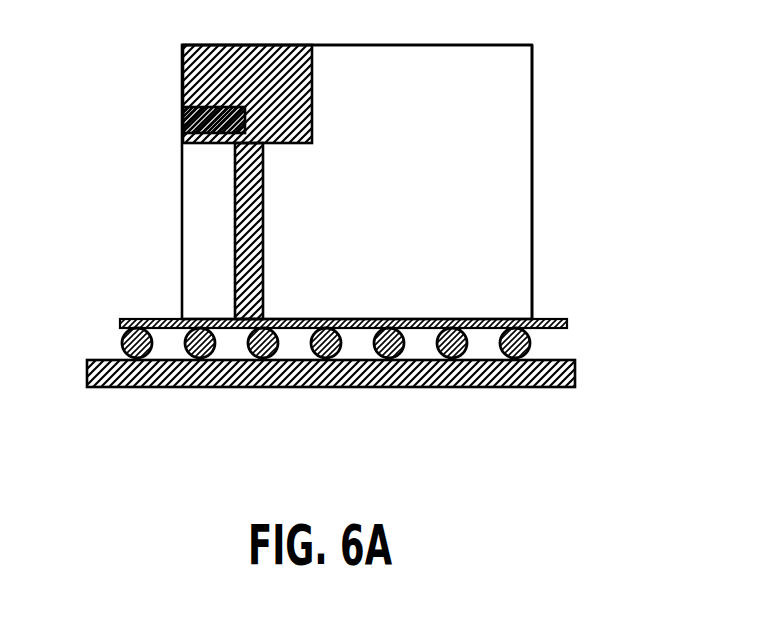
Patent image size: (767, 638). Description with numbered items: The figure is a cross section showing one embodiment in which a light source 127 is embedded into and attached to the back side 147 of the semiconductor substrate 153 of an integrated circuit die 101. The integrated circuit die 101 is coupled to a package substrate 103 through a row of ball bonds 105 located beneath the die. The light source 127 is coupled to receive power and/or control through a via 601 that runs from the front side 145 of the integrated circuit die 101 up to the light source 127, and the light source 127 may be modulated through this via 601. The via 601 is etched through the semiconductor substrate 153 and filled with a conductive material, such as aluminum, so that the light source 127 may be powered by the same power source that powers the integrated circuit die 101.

The integrated circuit die 101 is at (527, 130).
The back side 147 is at (400, 45).
The semiconductor substrate 153 is at (515, 215).
The light source 127 is at (188, 78).
The via 601 is at (263, 210).
The front side 145 is at (432, 318).
The ball bonds 105 is at (535, 342).
The package substrate 103 is at (575, 374).